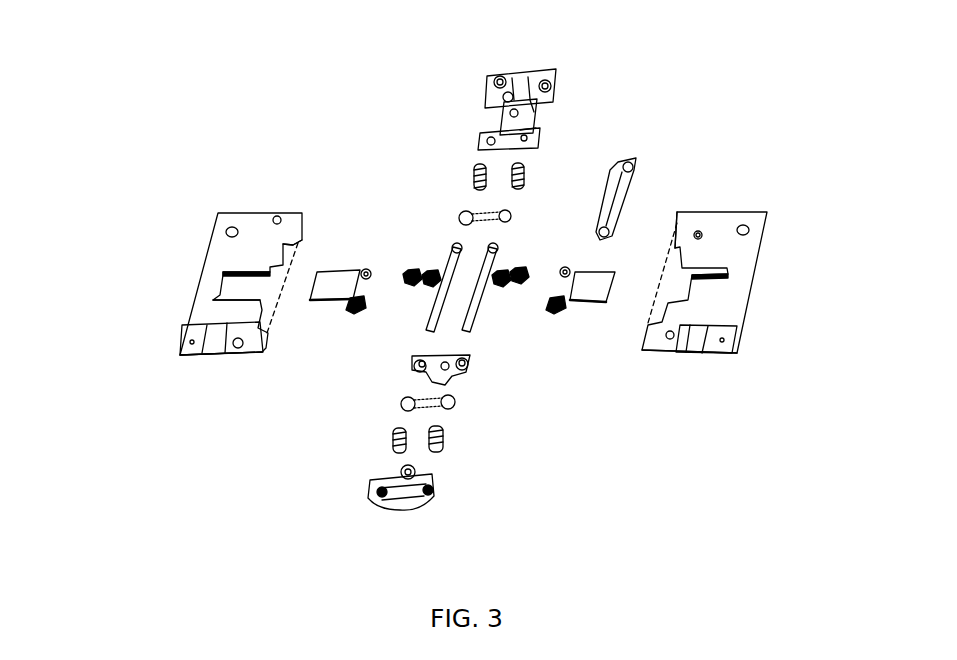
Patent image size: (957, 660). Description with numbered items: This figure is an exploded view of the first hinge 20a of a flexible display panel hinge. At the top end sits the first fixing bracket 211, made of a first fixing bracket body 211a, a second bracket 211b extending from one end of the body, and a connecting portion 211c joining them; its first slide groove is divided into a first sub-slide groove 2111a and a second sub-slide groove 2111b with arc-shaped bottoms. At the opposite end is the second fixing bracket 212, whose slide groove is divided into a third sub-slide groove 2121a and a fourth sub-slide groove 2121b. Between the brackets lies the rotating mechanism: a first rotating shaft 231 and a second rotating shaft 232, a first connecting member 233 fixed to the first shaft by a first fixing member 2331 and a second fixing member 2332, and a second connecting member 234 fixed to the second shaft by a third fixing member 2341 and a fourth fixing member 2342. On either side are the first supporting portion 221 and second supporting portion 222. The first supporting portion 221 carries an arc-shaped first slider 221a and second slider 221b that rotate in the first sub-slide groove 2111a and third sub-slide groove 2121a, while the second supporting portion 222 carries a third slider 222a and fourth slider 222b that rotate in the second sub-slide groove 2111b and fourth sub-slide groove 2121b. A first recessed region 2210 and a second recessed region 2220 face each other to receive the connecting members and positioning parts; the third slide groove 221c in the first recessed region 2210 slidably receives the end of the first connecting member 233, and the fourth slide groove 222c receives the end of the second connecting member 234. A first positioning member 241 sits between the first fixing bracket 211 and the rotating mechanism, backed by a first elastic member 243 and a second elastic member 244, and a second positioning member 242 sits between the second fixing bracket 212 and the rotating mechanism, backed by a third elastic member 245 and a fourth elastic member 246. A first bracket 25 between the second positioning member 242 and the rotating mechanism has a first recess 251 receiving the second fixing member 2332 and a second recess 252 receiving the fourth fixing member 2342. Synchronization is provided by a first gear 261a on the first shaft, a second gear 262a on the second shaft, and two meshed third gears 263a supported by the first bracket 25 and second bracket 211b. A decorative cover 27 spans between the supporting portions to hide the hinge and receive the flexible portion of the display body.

The first hinge 20a is at (262, 44).
The first fixing bracket 211 is at (530, 66).
The first fixing bracket body 211a is at (500, 80).
The first sub-slide groove 2111a is at (506, 95).
The second sub-slide groove 2111b is at (547, 86).
The connecting portion 211c is at (535, 108).
The second bracket 211b is at (530, 136).
The first elastic member 243 is at (476, 166).
The second elastic member 244 is at (522, 168).
The first positioning member 241 is at (464, 214).
The decorative cover 27 is at (645, 163).
The first rotating shaft 231 is at (434, 333).
The second rotating shaft 232 is at (470, 333).
The first gear 261a is at (411, 272).
The second gear 262a is at (521, 270).
The third gears 263a is at (430, 285).
The first connecting member 233 is at (323, 303).
The first fixing member 2331 is at (364, 269).
The second fixing member 2332 is at (354, 314).
The second connecting member 234 is at (596, 306).
The third fixing member 2341 is at (567, 268).
The fourth fixing member 2342 is at (556, 318).
The first supporting portion 221 is at (223, 255).
The first slider 221a is at (300, 237).
The third slide groove 221c is at (240, 298).
The first recessed region 2210 is at (257, 321).
The second slider 221b is at (265, 356).
The second supporting portion 222 is at (740, 263).
The third slider 222a is at (685, 214).
The second recessed region 2220 is at (693, 242).
The fourth slide groove 222c is at (714, 288).
The fourth slider 222b is at (657, 353).
The first bracket 25 is at (468, 375).
The first recess 251 is at (422, 366).
The second recess 252 is at (485, 378).
The second positioning member 242 is at (452, 406).
The third elastic member 245 is at (398, 450).
The fourth elastic member 246 is at (437, 452).
The second fixing bracket 212 is at (410, 514).
The third sub-slide groove 2121a is at (380, 486).
The fourth sub-slide groove 2121b is at (430, 488).